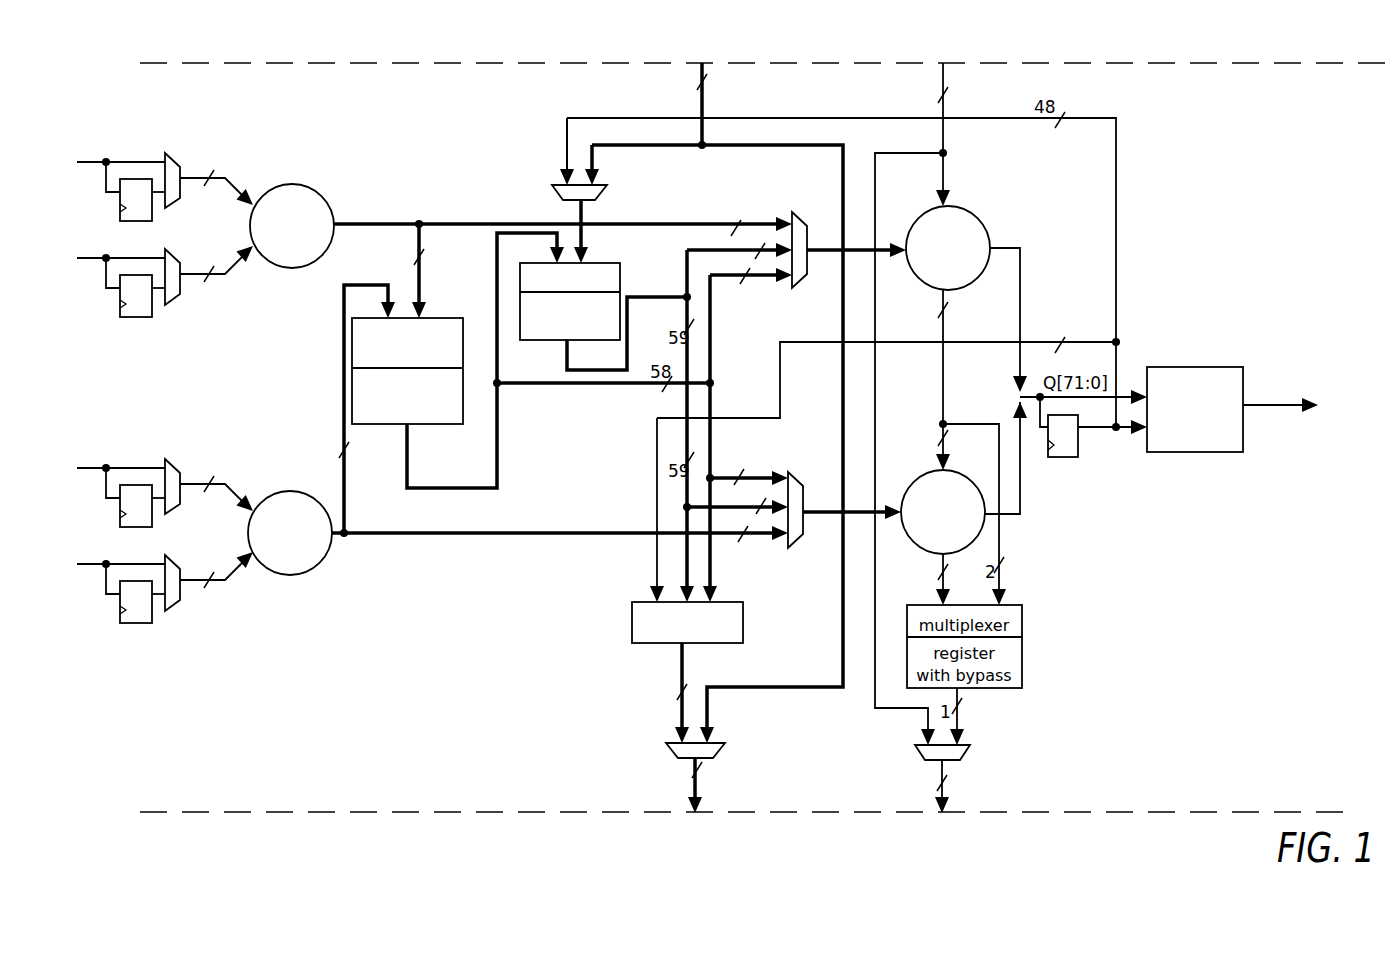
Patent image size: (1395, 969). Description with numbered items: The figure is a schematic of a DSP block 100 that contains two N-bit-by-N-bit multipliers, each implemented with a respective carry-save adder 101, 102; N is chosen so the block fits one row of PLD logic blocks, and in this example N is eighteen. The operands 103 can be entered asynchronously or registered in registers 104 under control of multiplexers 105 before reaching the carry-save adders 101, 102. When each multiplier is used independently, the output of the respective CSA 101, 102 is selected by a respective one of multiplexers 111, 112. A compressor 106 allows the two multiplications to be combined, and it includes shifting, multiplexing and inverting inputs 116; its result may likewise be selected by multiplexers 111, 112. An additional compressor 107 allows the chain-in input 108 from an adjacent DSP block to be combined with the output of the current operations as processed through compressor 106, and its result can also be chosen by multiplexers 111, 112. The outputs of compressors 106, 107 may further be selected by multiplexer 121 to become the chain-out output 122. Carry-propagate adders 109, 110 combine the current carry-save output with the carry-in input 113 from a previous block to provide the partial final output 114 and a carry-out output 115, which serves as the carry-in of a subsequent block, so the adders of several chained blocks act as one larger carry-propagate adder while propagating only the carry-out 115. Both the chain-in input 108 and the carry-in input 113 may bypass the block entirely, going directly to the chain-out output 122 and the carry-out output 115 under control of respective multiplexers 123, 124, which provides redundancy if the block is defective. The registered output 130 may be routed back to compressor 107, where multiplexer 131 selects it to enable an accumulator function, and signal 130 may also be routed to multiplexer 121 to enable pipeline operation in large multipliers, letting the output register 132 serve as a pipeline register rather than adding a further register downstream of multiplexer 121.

The DSP block 100 is at (1312, 172).
The carry-save adder 101 is at (302, 573).
The carry-save adder 102 is at (304, 186).
The operands 103 is at (83, 164).
The registers 104 is at (140, 221).
The multiplexers 105 is at (170, 152).
The compressor 106 is at (435, 424).
The compressor 107 is at (530, 340).
The chain-in input 108 is at (706, 80).
The carry-propagate adder 109 is at (917, 484).
The carry-propagate adder 110 is at (925, 216).
The multiplexer 111 is at (796, 548).
The multiplexer 112 is at (805, 212).
The carry-in input 113 is at (948, 80).
The partial final output 114 is at (1270, 406).
The carry-out output 115 is at (945, 793).
The shifting, multiplexing and inverting inputs 116 is at (433, 318).
The multiplexer 121 is at (722, 643).
The chain-out output 122 is at (700, 811).
The multiplexer 123 is at (724, 750).
The multiplexer 124 is at (968, 750).
The registered output 130 is at (1117, 356).
The multiplexer 131 is at (552, 193).
The output register 132 is at (1063, 457).